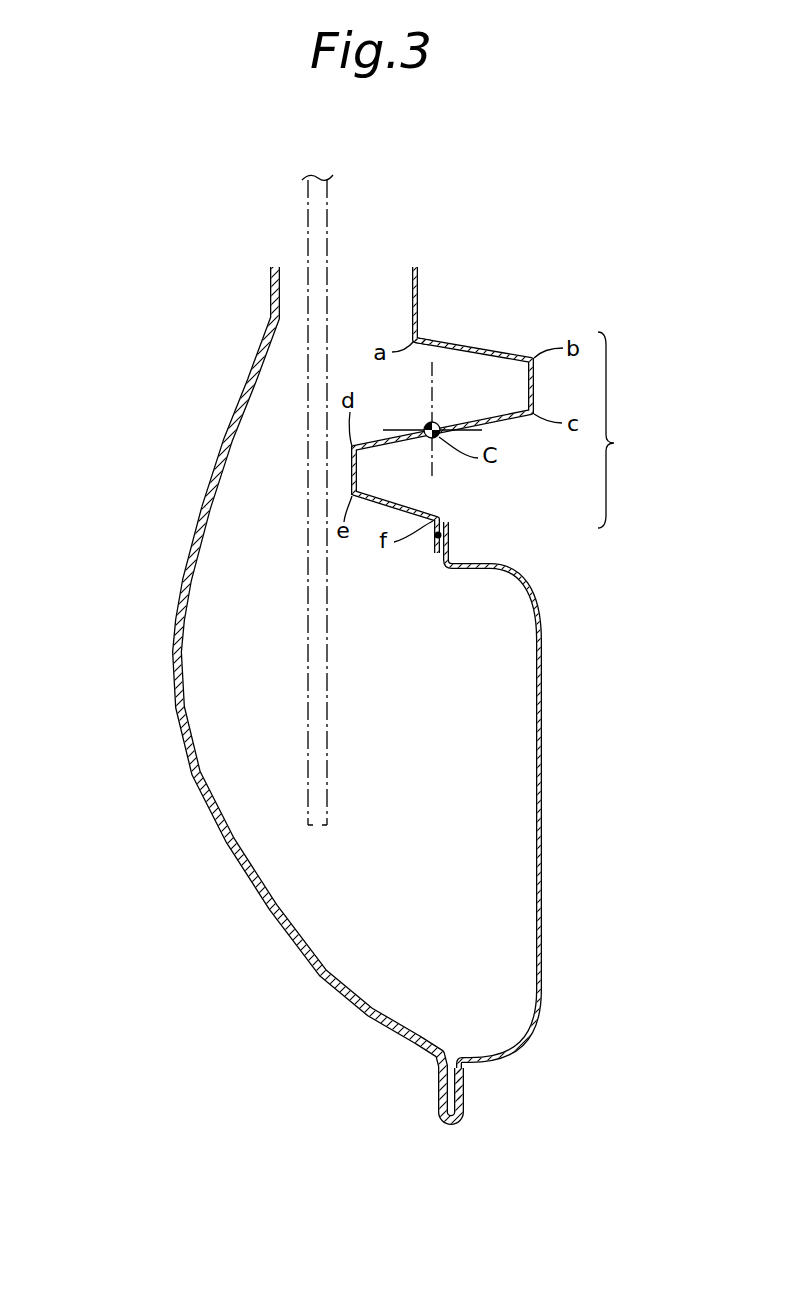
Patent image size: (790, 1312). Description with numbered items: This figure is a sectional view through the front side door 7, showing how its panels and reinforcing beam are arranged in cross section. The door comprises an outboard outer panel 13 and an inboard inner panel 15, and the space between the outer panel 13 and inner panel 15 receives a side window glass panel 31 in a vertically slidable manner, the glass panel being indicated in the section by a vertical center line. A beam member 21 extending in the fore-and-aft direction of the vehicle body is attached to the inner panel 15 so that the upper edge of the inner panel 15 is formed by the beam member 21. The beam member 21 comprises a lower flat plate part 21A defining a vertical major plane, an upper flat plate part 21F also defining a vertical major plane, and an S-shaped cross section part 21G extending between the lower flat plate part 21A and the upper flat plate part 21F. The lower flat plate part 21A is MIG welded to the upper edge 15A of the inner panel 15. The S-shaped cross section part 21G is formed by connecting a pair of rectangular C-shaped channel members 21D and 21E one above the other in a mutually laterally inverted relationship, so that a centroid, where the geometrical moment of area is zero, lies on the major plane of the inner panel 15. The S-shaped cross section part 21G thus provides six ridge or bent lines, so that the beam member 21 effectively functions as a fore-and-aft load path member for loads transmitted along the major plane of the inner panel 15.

The front side door 7 is at (233, 358).
The outer panel 13 is at (181, 580).
The inner panel 15 is at (542, 781).
The upper edge 15A is at (449, 551).
The beam member 21 is at (502, 342).
The lower flat plate part 21A is at (435, 538).
The C-shaped channel member 21D is at (528, 385).
The C-shaped channel member 21E is at (351, 470).
The upper flat plate part 21F is at (419, 292).
The S-shaped cross section part 21G is at (635, 430).
The side window glass panel 31 is at (326, 749).